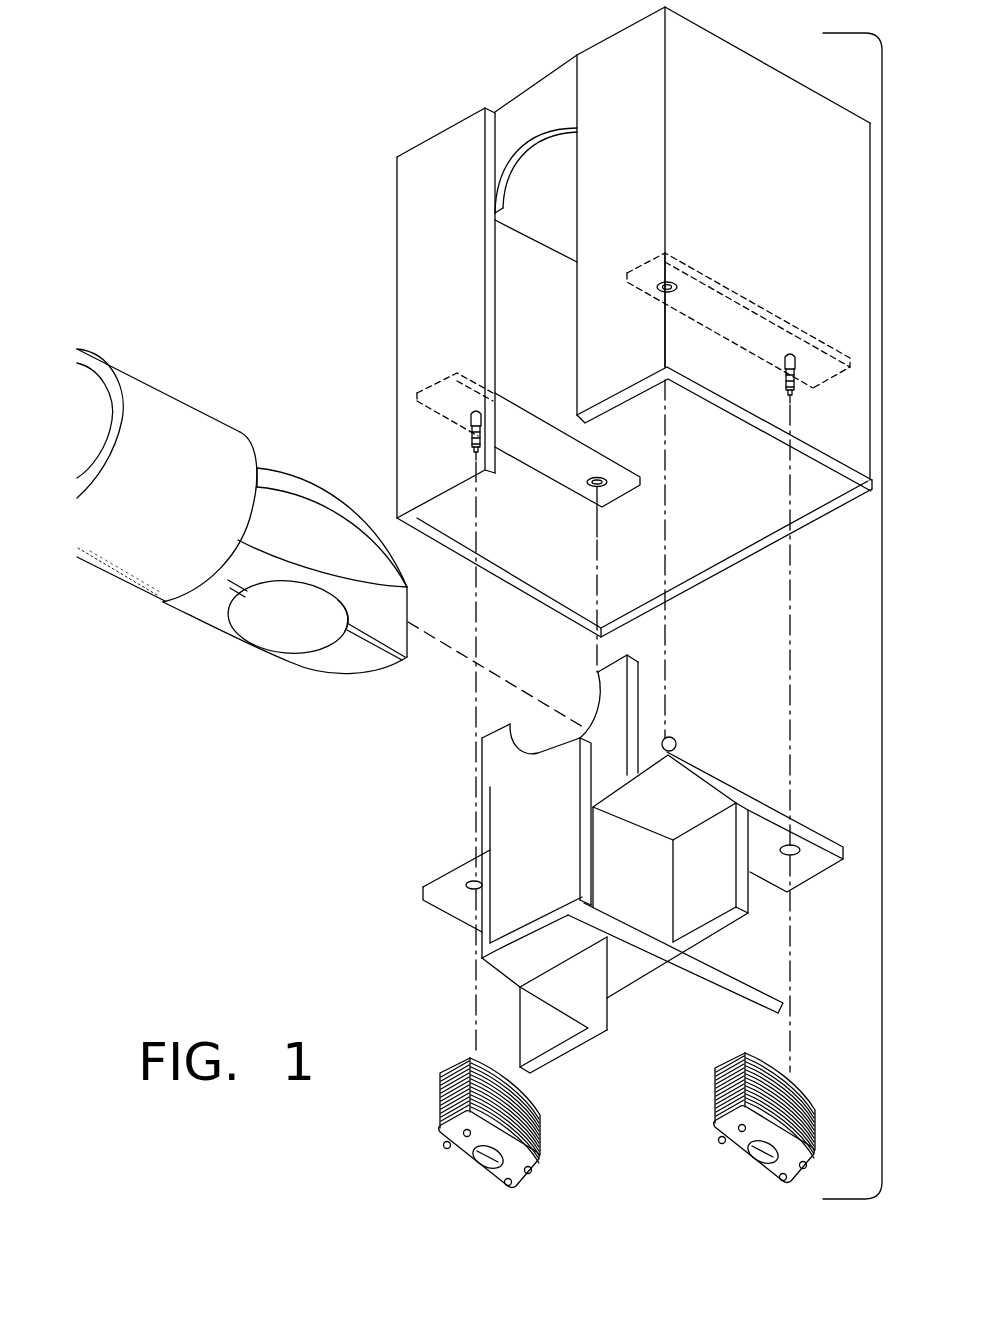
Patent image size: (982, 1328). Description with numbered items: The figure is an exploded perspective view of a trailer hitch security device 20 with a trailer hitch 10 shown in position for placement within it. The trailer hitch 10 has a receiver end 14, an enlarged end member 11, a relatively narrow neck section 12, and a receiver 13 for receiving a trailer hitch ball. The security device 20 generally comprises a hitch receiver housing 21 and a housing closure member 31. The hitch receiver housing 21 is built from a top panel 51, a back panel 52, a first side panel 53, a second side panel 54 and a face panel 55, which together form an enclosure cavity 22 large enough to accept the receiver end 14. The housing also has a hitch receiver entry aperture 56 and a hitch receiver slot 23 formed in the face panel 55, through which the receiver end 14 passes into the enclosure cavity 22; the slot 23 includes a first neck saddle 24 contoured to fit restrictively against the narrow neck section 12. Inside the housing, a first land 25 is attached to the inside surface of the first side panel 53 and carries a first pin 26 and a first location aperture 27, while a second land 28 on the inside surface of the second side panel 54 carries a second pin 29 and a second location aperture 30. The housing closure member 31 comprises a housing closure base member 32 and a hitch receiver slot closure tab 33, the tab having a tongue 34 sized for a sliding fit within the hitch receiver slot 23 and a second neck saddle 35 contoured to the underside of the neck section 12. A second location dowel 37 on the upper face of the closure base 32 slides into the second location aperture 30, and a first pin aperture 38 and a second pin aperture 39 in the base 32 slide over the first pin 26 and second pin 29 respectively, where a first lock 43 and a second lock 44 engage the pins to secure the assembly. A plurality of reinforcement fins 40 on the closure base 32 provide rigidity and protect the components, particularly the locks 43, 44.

The trailer hitch 10 is at (135, 321).
The enlarged end member 11 is at (342, 495).
The narrow neck section 12 is at (258, 470).
The receiver 13 is at (262, 625).
The receiver end 14 is at (410, 600).
The trailer hitch security device 20 is at (884, 603).
The hitch receiver housing 21 is at (387, 158).
The enclosure cavity 22 is at (540, 292).
The hitch receiver slot 23 is at (492, 347).
The first neck saddle 24 is at (530, 143).
The first land 25 is at (542, 458).
The first pin 26 is at (462, 452).
The first location aperture 27 is at (605, 487).
The second land 28 is at (693, 305).
The second pin 29 is at (800, 397).
The second location aperture 30 is at (655, 300).
The housing closure member 31 is at (744, 755).
The housing closure base member 32 is at (808, 837).
The hitch receiver slot closure tab 33 is at (454, 827).
The tongue 34 is at (588, 748).
The second neck saddle 35 is at (516, 742).
The second location dowel 37 is at (674, 745).
The first pin aperture 38 is at (476, 890).
The second pin aperture 39 is at (793, 855).
The reinforcement fins 40 is at (708, 973).
The first lock 43 is at (525, 1105).
The second lock 44 is at (728, 1083).
The top panel 51 is at (532, 230).
The back panel 52 is at (722, 540).
The first side panel 53 is at (537, 573).
The second side panel 54 is at (785, 88).
The face panel 55 is at (398, 225).
The hitch receiver entry aperture 56 is at (810, 487).